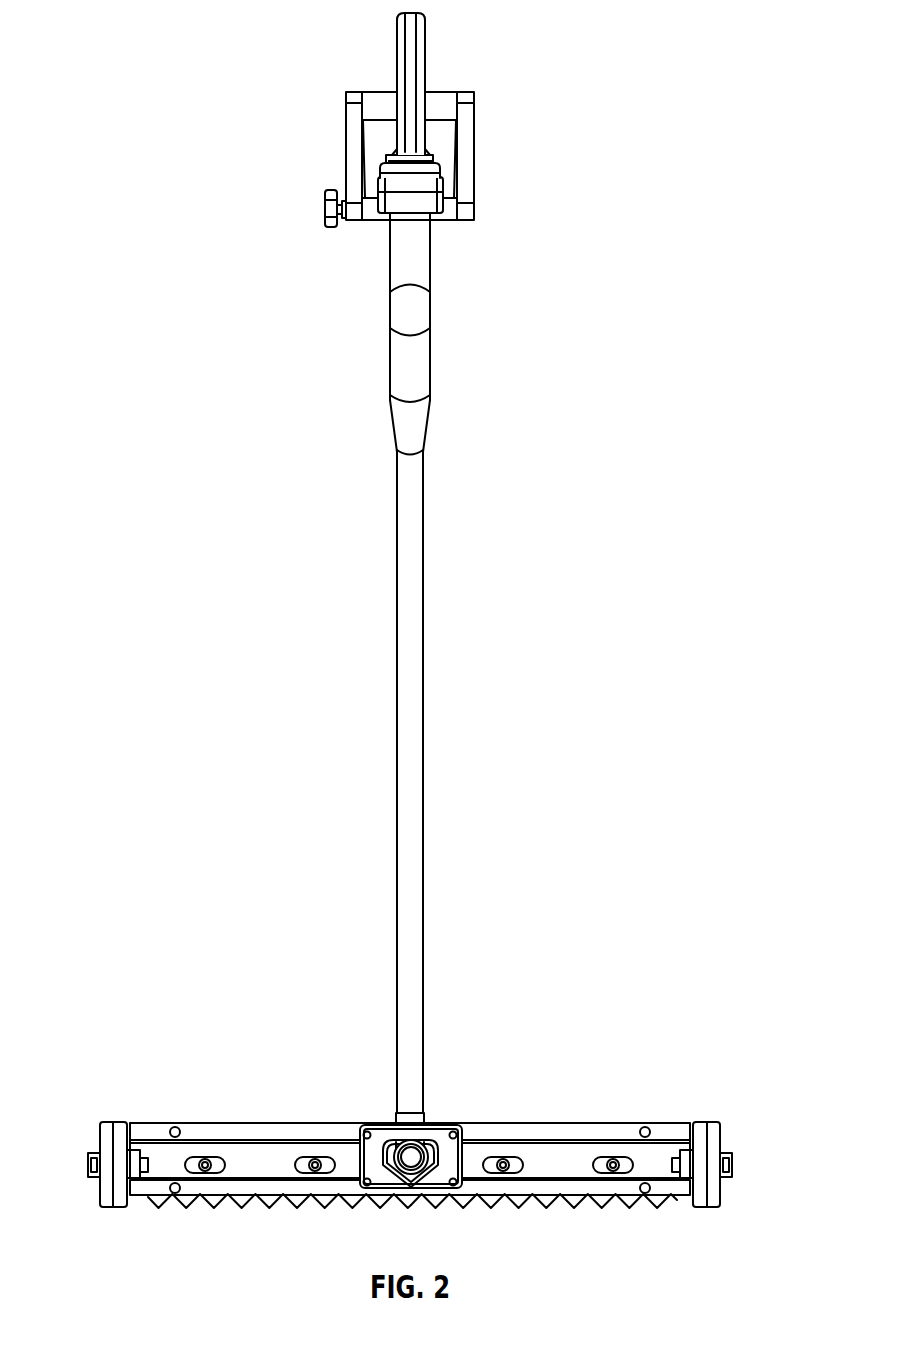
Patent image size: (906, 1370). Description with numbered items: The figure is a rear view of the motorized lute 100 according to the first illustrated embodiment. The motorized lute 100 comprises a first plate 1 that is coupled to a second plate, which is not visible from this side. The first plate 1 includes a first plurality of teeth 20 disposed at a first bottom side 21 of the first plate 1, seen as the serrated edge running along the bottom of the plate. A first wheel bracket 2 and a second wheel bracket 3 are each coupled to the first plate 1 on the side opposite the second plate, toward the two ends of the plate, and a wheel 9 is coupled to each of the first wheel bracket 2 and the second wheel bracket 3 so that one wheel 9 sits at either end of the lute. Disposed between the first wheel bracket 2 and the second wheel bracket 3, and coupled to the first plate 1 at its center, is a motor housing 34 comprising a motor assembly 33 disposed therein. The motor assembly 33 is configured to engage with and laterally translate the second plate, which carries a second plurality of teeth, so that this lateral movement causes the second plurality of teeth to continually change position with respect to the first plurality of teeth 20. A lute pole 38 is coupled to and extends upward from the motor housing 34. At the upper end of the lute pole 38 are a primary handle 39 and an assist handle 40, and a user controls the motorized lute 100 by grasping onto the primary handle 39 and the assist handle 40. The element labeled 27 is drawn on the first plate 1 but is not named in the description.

The motorized lute 100 is at (512, 35).
The primary handle 39 is at (397, 60).
The assist handle 40 is at (475, 155).
The lute pole 38 is at (423, 696).
The first plate 1 is at (240, 1130).
The first wheel bracket 2 is at (265, 1163).
The second wheel bracket 3 is at (582, 1170).
The adjustment slot 27 is at (613, 1160).
The first plurality of teeth 20 is at (288, 1193).
The first bottom side 21 is at (575, 1193).
The motor assembly 33 is at (380, 1125).
The motor housing 34 is at (437, 1125).
The wheel 9 is at (113, 1208).